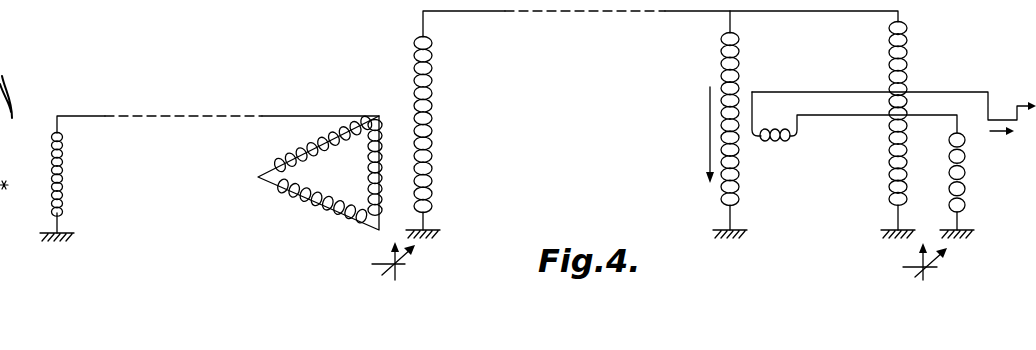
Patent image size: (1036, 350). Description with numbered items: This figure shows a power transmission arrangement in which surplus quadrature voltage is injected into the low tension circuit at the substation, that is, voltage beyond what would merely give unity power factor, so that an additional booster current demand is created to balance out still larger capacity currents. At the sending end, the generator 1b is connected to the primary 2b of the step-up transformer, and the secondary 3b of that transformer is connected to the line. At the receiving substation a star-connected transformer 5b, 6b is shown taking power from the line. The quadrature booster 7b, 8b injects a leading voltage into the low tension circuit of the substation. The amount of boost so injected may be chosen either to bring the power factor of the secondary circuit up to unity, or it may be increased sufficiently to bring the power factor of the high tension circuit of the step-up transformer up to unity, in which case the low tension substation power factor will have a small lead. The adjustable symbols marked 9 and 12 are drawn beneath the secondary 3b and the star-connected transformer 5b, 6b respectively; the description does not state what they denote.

The generator 1b is at (63, 172).
The primary 2b is at (309, 172).
The secondary 3b is at (433, 130).
The star-connected transformer 5b is at (890, 194).
The star-connected transformer 6b is at (966, 178).
The quadrature booster 7b is at (713, 130).
The quadrature booster 8b is at (778, 142).
The variable condenser / adjustment 9 is at (404, 269).
The variable condenser / adjustment 12 is at (940, 262).